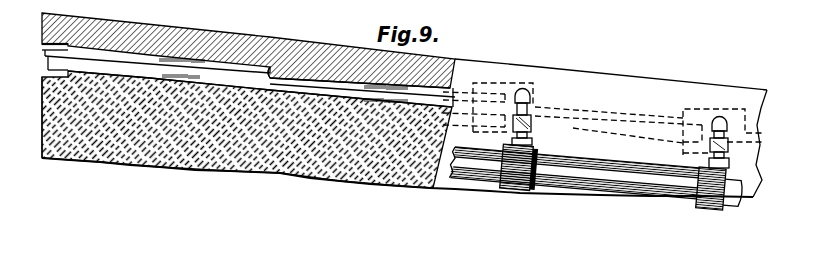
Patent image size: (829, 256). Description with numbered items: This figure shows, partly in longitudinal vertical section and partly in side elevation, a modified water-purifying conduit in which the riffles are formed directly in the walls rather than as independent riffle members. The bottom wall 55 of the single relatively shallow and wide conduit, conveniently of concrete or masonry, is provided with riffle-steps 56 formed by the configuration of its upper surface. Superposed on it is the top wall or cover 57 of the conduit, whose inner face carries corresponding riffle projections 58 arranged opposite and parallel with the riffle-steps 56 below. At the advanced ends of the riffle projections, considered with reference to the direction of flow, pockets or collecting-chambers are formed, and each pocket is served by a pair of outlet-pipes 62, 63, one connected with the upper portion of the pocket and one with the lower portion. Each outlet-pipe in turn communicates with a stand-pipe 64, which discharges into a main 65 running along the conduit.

The bottom wall of the conduit 55 is at (173, 150).
The riffle-steps 56 is at (263, 94).
The top wall or cover of the conduit 57 is at (244, 43).
The riffle projections 58 is at (271, 63).
The outlet-pipe 62 is at (531, 92).
The outlet-pipe 63 is at (534, 130).
The stand-pipe 64 is at (532, 141).
The main 65 is at (627, 193).